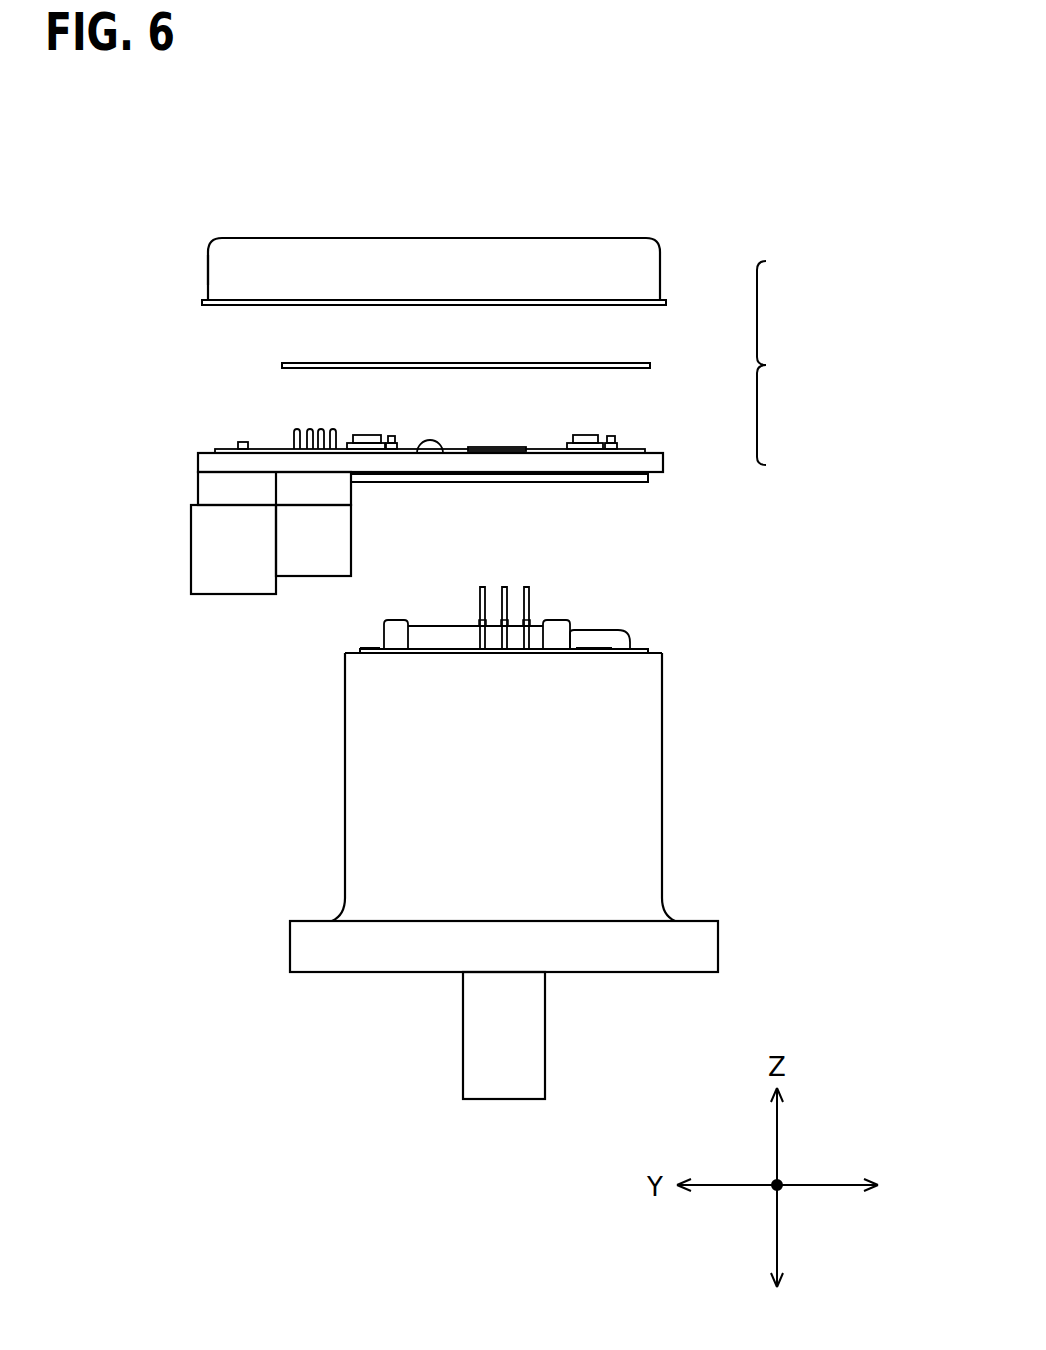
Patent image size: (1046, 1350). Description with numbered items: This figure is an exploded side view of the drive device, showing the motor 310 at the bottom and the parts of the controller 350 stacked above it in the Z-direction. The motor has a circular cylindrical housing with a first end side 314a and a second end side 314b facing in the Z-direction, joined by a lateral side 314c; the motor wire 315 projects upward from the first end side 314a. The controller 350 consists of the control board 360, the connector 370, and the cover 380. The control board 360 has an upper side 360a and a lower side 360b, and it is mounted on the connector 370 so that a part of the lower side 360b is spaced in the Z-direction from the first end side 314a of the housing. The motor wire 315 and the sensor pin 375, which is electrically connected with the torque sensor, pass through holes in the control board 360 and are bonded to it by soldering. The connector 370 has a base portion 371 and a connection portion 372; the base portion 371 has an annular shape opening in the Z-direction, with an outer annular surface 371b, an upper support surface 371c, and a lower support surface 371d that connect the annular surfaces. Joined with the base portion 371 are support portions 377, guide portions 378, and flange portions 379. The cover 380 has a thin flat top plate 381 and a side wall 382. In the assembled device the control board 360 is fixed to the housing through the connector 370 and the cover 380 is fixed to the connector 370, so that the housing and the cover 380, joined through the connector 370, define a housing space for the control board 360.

The motor 310 is at (510, 821).
The first end side 314a is at (632, 645).
The second end side 314b is at (387, 972).
The lateral side 314c is at (345, 806).
The motor wire 315 is at (526, 587).
The controller 350 is at (789, 363).
The control board 360 is at (652, 365).
The upper side 360a is at (285, 363).
The lower side 360b is at (285, 368).
The connector 370 is at (665, 460).
The base portion 371 is at (390, 482).
The outer annular surface 371b is at (607, 470).
The upper support surface 371c is at (440, 462).
The lower support surface 371d is at (652, 479).
The connection portion 372 is at (191, 535).
The sensor pin 375 is at (307, 430).
The support portion 377 is at (397, 445).
The guide portion 378 is at (492, 447).
The flange portion 379 is at (367, 435).
The cover 380 is at (662, 278).
The top plate 381 is at (314, 238).
The side wall 382 is at (208, 267).